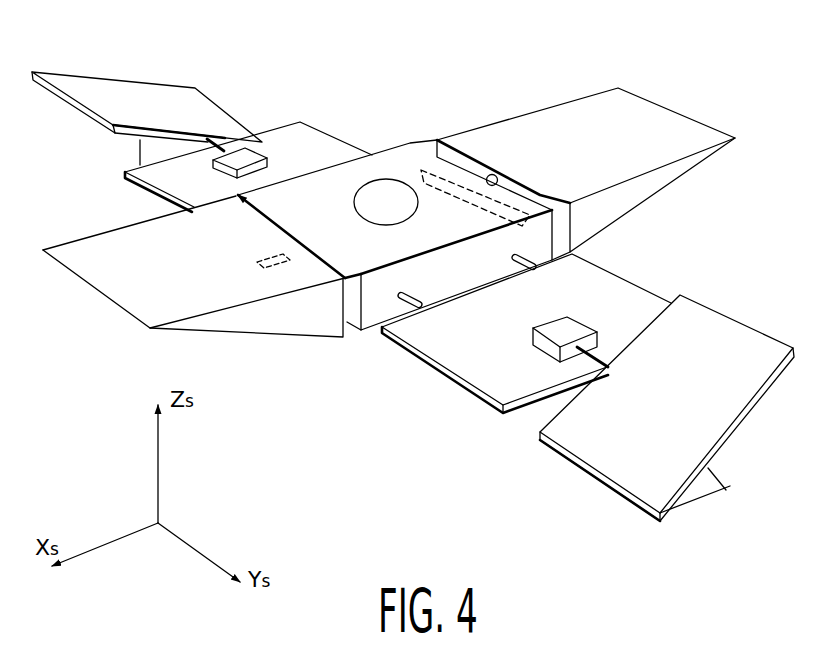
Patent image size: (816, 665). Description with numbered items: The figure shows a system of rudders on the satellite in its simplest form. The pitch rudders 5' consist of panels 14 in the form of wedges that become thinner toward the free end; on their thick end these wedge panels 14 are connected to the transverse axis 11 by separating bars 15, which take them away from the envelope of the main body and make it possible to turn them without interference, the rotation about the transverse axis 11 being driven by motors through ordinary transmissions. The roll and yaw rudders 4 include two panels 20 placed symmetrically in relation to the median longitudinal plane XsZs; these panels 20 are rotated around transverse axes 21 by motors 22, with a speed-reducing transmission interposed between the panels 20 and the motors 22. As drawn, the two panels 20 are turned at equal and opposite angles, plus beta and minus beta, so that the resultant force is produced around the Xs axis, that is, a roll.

The roll and yaw rudders 4 is at (418, 265).
The pitch rudders 5' is at (587, 135).
The transverse axis 11 is at (420, 168).
The panels in the form of wedges 14 is at (655, 118).
The separating bars 15 is at (491, 172).
The panels 20 is at (200, 103).
The transverse axes 21 is at (216, 150).
The motors 22 is at (252, 158).